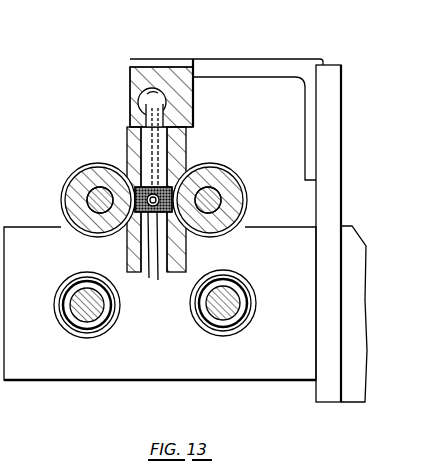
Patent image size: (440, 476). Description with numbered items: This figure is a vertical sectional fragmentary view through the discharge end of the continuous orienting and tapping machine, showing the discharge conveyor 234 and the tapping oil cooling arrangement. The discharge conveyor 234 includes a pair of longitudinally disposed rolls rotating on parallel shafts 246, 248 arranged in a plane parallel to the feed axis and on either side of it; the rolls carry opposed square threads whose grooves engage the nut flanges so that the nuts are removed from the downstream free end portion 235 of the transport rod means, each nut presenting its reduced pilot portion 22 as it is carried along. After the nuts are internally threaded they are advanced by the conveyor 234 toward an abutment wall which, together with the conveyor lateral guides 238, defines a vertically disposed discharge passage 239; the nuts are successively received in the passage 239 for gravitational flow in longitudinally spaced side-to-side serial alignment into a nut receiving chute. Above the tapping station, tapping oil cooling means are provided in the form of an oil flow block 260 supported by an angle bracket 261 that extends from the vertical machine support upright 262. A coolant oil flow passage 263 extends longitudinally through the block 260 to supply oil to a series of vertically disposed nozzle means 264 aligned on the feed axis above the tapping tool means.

The reduced pilot portion 22 is at (167, 184).
The discharge conveyor 234 is at (232, 127).
The downstream free end portion 235 is at (162, 280).
The conveyor lateral guides 238 is at (127, 253).
The discharge passage 239 is at (152, 267).
The shaft 246 is at (90, 182).
The shaft 248 is at (214, 192).
The oil flow block 260 is at (151, 73).
The angle bracket 261 is at (263, 58).
The vertical machine support upright 262 is at (323, 199).
The coolant oil flow passage 263 is at (150, 90).
The nozzle means 264 is at (132, 112).